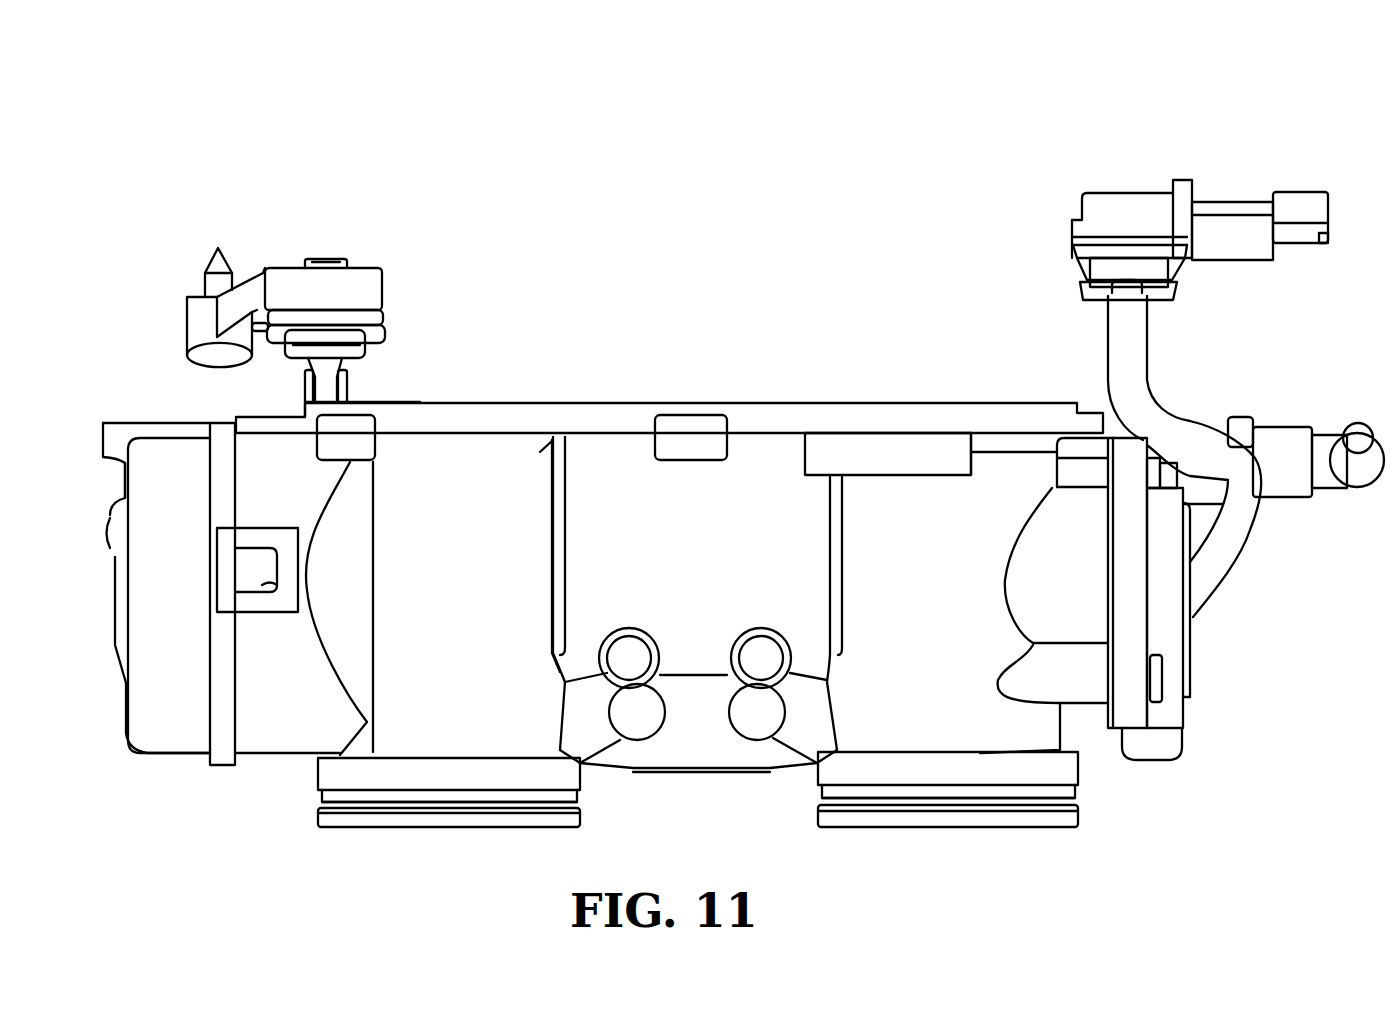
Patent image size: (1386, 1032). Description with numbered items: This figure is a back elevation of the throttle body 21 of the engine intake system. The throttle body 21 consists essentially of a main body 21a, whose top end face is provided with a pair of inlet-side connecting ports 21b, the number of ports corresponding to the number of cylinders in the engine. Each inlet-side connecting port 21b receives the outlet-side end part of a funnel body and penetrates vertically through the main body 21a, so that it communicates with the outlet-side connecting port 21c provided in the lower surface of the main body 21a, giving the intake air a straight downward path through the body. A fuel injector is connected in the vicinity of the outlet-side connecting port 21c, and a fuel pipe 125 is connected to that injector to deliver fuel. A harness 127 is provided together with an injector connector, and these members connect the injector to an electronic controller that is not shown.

The throttle body 21 is at (966, 152).
The main body 21a is at (773, 468).
The inlet-side connecting ports 21b is at (537, 400).
The outlet-side connecting port 21c is at (462, 830).
The fuel pipe 125 is at (1285, 438).
The harness 127 is at (327, 382).